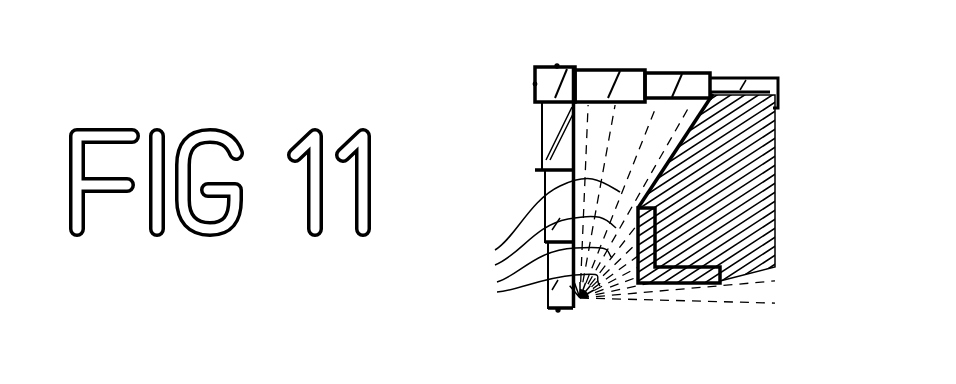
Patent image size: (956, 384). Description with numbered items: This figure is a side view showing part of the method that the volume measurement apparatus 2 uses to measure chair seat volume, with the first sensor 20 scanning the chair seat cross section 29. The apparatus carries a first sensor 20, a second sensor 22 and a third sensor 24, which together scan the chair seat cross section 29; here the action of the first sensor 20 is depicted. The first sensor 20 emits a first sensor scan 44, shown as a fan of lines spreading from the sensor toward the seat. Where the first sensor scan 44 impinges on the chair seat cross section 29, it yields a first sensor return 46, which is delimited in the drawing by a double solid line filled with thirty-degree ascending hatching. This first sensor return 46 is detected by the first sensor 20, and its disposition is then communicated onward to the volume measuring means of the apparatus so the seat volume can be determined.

The volume measurement apparatus 2 is at (478, 106).
The second sensor 22 is at (585, 110).
The third sensor 24 is at (778, 105).
The first sensor scan 44 is at (530, 236).
The first sensor 20 is at (579, 312).
The chair seat cross section 29 is at (696, 284).
The first sensor return 46 is at (760, 278).